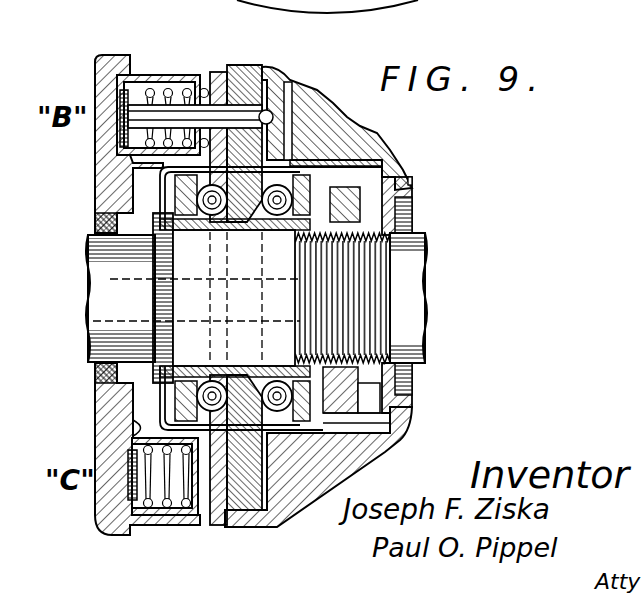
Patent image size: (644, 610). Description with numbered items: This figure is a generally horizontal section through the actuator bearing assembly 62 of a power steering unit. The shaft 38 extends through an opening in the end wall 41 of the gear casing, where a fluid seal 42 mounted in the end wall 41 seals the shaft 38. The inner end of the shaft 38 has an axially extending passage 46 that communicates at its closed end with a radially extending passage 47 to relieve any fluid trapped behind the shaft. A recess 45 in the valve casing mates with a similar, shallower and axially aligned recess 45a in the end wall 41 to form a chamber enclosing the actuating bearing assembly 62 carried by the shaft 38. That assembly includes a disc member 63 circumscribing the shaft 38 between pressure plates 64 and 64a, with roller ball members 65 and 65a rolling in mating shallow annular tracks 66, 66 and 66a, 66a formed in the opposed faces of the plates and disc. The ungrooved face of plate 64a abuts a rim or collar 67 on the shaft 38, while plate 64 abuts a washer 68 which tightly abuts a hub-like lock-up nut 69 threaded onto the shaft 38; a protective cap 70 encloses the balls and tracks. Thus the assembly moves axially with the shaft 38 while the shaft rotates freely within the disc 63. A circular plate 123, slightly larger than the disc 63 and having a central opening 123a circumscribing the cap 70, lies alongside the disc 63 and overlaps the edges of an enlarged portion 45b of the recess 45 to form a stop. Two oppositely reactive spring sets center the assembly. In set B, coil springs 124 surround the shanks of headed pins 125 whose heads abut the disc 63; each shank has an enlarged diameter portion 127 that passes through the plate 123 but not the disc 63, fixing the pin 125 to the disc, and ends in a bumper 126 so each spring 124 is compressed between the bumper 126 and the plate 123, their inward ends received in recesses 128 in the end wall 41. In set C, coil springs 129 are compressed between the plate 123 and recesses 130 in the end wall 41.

The shaft 38 is at (405, 243).
The end wall 41 is at (100, 178).
The fluid seal 42 is at (104, 216).
The recess 45 is at (367, 147).
The recess 45a is at (100, 437).
The enlarged portion of the recess 45b is at (250, 80).
The axially extending passage 46 is at (110, 279).
The radially extending passage 47 is at (300, 258).
The actuating bearing assembly 62 is at (364, 419).
The disc member 63 is at (300, 100).
The pressure plate 64 is at (370, 441).
The pressure plate 64a is at (163, 401).
The roller ball members 65 is at (280, 434).
The roller ball members 65a is at (256, 456).
The annular grooves or tracks 66 is at (272, 380).
The annular grooves or tracks 66a is at (208, 380).
The rim or collar 67 is at (162, 287).
The washer 68 is at (386, 178).
The hub-like lock-up nut 69 is at (372, 178).
The protective cap 70 is at (318, 160).
The circular plate 123 is at (215, 71).
The central opening 123a is at (242, 216).
The coil springs 124 is at (150, 89).
The headed pin 125 is at (272, 110).
The bumper or abutment member 126 is at (121, 97).
The enlarged diameter portion 127 is at (180, 106).
The recesses 128 is at (137, 74).
The coil springs 129 is at (167, 513).
The recess 130 is at (163, 512).